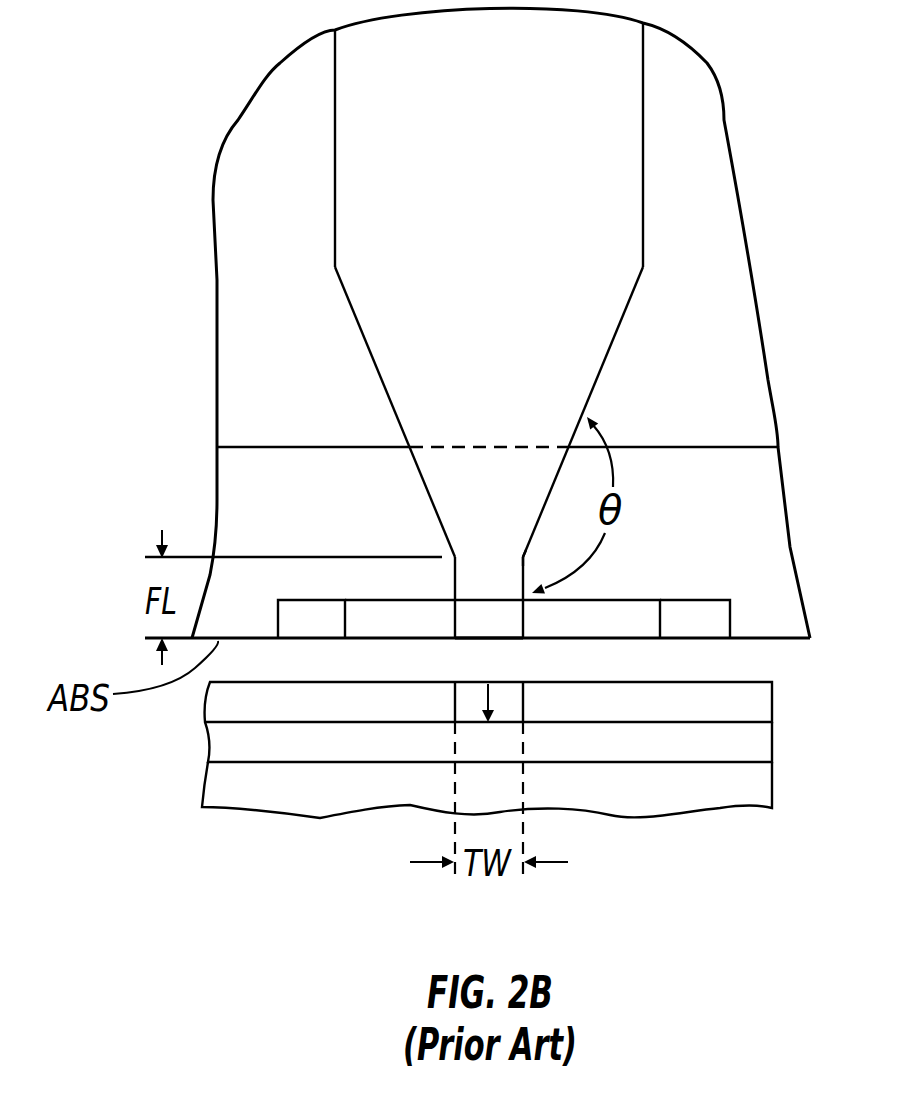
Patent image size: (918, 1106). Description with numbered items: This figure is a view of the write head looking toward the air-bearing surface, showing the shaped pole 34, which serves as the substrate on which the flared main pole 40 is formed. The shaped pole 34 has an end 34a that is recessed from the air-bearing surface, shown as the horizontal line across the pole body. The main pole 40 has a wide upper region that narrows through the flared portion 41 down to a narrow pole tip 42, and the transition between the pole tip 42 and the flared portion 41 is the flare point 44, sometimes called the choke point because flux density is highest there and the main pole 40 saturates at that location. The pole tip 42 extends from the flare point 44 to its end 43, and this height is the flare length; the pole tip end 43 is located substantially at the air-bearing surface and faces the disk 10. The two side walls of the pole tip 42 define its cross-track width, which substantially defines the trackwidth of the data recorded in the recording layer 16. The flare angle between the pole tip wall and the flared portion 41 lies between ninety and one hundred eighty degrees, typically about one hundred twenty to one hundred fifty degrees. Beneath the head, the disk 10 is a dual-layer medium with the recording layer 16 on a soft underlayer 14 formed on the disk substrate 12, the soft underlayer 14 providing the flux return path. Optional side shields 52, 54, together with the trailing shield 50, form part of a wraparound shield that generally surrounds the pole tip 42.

The disk 10 is at (158, 868).
The disk substrate 12 is at (210, 785).
The soft underlayer 14 is at (210, 742).
The recording layer 16 is at (210, 700).
The shaped pole 34 is at (733, 297).
The end of shaped pole 34a is at (650, 447).
The flared main pole 40 is at (355, 149).
The flared portion 41 is at (440, 462).
The pole tip 42 is at (470, 563).
The pole tip end 43 is at (482, 641).
The flare point 44 is at (527, 560).
The trailing shield 50 is at (617, 607).
The side shield 52 is at (287, 625).
The side shield 54 is at (697, 607).